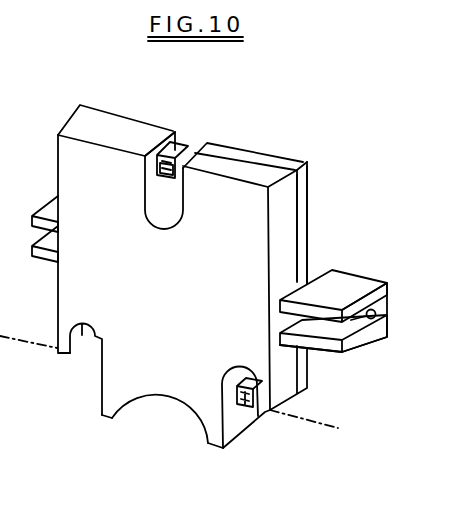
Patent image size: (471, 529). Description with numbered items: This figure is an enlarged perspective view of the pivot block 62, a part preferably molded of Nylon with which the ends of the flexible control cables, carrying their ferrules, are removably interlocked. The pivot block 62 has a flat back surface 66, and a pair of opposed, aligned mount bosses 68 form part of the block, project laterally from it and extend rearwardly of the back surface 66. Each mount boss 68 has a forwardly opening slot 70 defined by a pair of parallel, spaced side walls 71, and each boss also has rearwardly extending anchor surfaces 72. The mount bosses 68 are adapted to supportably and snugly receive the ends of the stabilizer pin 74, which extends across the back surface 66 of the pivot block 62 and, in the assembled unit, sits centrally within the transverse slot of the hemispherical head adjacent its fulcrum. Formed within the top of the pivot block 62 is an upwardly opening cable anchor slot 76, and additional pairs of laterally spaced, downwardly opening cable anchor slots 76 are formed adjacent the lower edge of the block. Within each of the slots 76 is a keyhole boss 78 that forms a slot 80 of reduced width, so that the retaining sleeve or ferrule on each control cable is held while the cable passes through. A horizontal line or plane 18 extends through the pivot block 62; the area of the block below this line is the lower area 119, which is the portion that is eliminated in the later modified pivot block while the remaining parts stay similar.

The horizontal line or plane 18 is at (26, 346).
The pivot block 62 is at (247, 137).
The flat back surface 66 is at (308, 192).
The mount bosses 68 is at (50, 200).
The forwardly opening slot 70 is at (50, 262).
The side walls 71 is at (323, 343).
The anchor surfaces 72 is at (390, 292).
The stabilizer pin 74 is at (370, 319).
The cable anchor slots 76 is at (157, 216).
The keyhole boss 78 is at (184, 152).
The slot of reduced width 80 is at (160, 172).
The lower area 119 is at (127, 390).